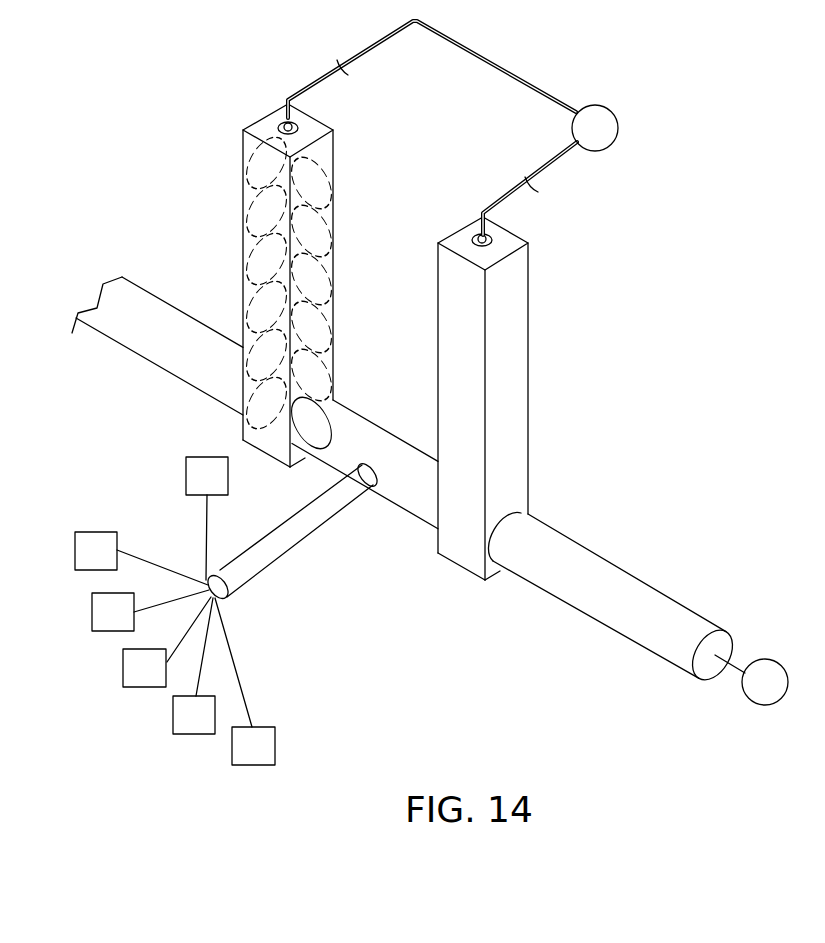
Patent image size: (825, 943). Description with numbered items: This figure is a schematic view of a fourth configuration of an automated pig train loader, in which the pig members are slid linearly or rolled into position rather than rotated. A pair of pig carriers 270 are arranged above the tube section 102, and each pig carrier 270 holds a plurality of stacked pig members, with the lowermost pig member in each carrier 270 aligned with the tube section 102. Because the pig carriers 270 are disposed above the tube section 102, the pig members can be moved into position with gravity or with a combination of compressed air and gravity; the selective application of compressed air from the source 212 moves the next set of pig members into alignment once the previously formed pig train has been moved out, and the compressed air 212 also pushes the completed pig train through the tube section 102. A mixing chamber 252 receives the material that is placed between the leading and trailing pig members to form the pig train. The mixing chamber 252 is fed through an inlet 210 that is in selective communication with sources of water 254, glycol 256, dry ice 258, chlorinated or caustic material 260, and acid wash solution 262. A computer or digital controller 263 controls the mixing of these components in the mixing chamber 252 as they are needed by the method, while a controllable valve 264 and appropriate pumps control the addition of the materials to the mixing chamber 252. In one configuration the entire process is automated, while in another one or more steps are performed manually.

The tube section 102 is at (613, 577).
The inlet 210 is at (233, 572).
The compressed air 212 is at (600, 137).
The mixing chamber 252 is at (393, 493).
The source of water 254 is at (92, 540).
The source of glycol 256 is at (93, 608).
The source of dry ice 258 is at (127, 673).
The source of chlorinated or caustic material 260 is at (193, 722).
The source of acid wash solution 262 is at (260, 748).
The computer or digital controller 263 is at (210, 467).
The controllable valve 264 is at (205, 583).
The pig carrier 270 is at (327, 173).